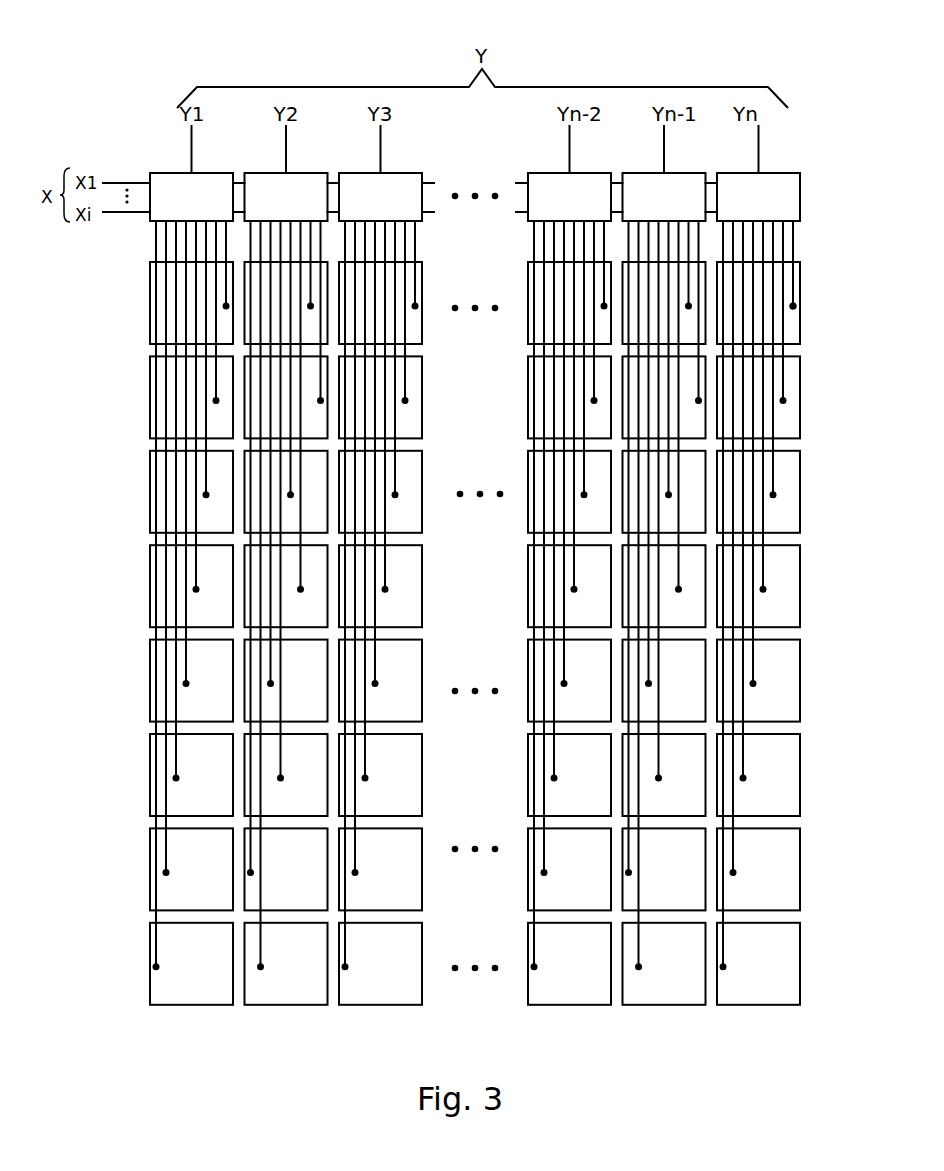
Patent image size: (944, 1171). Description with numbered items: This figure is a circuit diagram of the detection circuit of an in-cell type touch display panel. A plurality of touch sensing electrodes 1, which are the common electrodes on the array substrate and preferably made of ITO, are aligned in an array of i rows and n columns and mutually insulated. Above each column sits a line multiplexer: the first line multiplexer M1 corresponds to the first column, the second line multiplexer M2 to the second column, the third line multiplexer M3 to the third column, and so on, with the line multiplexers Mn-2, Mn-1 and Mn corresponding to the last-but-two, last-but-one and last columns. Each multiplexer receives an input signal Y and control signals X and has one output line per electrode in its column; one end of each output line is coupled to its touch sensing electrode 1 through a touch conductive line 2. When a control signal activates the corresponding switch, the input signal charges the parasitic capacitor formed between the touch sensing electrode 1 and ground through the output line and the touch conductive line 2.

The touch sensing electrode 1 is at (800, 772).
The touch conductive line 2 is at (795, 290).
The first line multiplexer M1 is at (191, 197).
The second line multiplexer M2 is at (286, 197).
The third line multiplexer M3 is at (380, 197).
The n−2th line multiplexer Mn-2 is at (569, 197).
The n−1th line multiplexer Mn-1 is at (664, 197).
The nth line multiplexer Mn is at (758, 197).